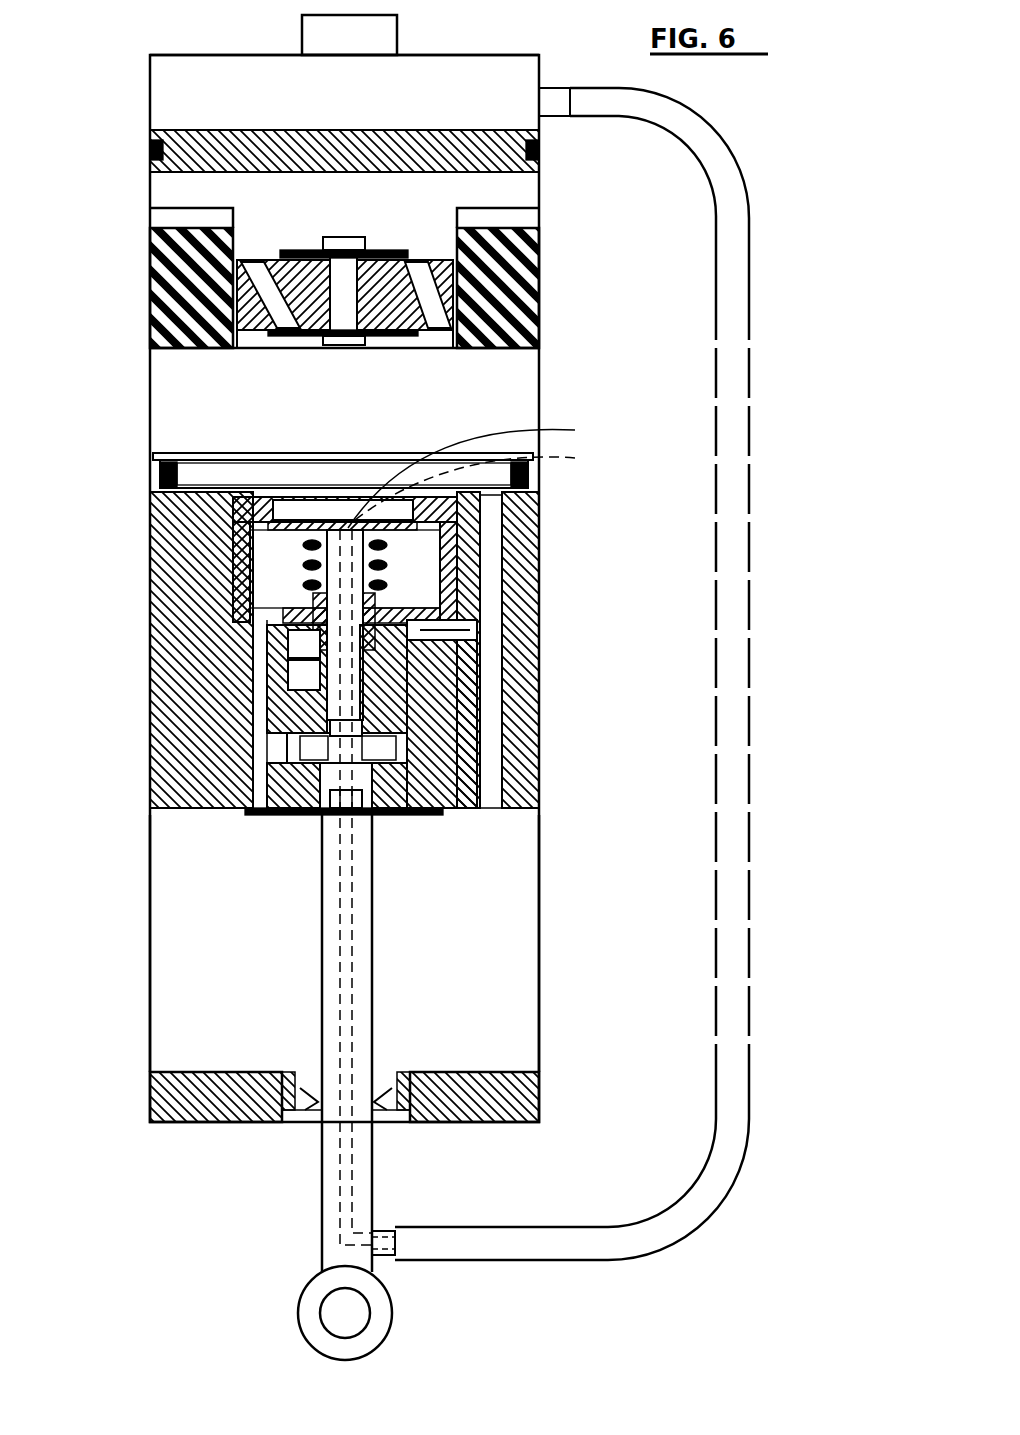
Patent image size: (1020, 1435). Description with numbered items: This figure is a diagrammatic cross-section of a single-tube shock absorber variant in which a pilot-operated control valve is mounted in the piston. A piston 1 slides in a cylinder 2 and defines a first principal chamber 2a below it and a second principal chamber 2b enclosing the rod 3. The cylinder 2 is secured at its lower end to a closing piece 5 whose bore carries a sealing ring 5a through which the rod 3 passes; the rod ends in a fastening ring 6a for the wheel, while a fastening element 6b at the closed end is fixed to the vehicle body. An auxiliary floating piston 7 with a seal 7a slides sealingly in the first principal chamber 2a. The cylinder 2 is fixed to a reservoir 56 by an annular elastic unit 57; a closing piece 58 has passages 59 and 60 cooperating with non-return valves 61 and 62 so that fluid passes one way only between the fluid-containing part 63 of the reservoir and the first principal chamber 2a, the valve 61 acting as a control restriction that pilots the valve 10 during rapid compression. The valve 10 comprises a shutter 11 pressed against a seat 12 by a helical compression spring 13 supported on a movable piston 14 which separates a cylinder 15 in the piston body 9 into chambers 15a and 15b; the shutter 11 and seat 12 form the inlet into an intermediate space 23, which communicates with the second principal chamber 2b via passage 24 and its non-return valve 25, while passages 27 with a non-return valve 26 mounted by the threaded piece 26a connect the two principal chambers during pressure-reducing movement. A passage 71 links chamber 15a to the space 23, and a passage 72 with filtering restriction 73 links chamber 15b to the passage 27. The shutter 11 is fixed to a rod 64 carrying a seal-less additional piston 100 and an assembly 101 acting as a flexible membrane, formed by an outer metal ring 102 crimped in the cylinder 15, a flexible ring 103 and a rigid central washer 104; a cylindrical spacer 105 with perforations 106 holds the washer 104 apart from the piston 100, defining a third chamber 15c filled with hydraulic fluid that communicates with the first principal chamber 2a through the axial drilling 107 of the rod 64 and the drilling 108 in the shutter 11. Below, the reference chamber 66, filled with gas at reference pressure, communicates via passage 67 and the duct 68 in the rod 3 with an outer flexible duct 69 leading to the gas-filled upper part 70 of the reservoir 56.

The piston 1 is at (140, 730).
The cylinder 2 is at (140, 956).
The first principal chamber 2a is at (195, 400).
The second principal chamber 2b is at (228, 987).
The rod 3 is at (332, 905).
The closing piece 5 is at (180, 1082).
The sealing ring 5a is at (200, 1100).
The fastening ring 6a is at (320, 1313).
The fastening element 6b is at (330, 22).
The auxiliary floating piston 7 is at (190, 135).
The seal 7a is at (165, 150).
The piston body 9 is at (430, 815).
The valve 10 is at (280, 571).
The shutter 11 is at (295, 520).
The seat 12 is at (275, 510).
The helical compression spring 13 is at (300, 535).
The movable piston 14 is at (375, 572).
The cylinder 15 is at (430, 660).
The chamber 15a is at (300, 672).
The chamber 15b is at (300, 633).
The third chamber 15c is at (395, 720).
The intermediate space 23 is at (305, 552).
The passage 24 is at (265, 795).
The non-return valve 25 is at (268, 815).
The non-return valve 26 is at (155, 500).
The threaded piece 26a is at (520, 480).
The passages 27 is at (492, 519).
The reservoir 56 is at (185, 210).
The annular elastic unit 57 is at (470, 333).
The closing piece 58 is at (430, 276).
The passage 59 is at (430, 302).
The passage 60 is at (190, 282).
The non-return valve 61 is at (440, 248).
The non-return valve 62 is at (400, 338).
The part of the reservoir 63 is at (172, 174).
The rod 64 is at (365, 548).
The reference chamber 66 is at (285, 817).
The passage 67 is at (308, 820).
The duct 68 is at (355, 930).
The outer flexible duct 69 is at (730, 975).
The upper part of the reservoir 70 is at (205, 83).
The passage 71 is at (300, 655).
The passage 72 is at (458, 632).
The filtering restriction 73 is at (430, 600).
The additional piston 100 is at (375, 690).
The assembly 101 is at (410, 815).
The outer metal ring 102 is at (290, 765).
The flexible ring 103 is at (390, 770).
The rigid central washer 104 is at (400, 800).
The cylindrical spacer 105 is at (290, 745).
The perforations 106 is at (375, 745).
The axial drilling 107 is at (488, 482).
The drilling 108 is at (485, 470).